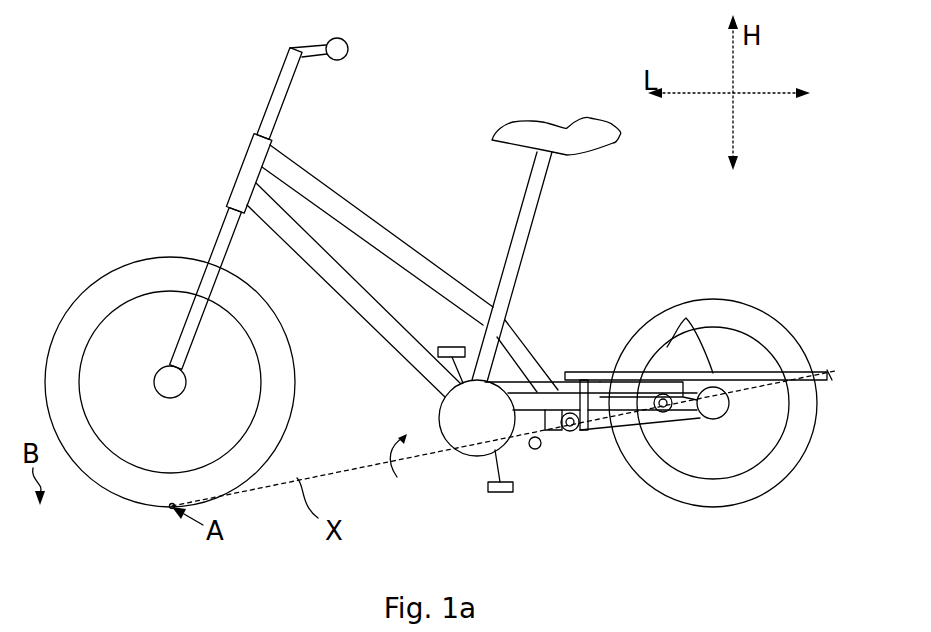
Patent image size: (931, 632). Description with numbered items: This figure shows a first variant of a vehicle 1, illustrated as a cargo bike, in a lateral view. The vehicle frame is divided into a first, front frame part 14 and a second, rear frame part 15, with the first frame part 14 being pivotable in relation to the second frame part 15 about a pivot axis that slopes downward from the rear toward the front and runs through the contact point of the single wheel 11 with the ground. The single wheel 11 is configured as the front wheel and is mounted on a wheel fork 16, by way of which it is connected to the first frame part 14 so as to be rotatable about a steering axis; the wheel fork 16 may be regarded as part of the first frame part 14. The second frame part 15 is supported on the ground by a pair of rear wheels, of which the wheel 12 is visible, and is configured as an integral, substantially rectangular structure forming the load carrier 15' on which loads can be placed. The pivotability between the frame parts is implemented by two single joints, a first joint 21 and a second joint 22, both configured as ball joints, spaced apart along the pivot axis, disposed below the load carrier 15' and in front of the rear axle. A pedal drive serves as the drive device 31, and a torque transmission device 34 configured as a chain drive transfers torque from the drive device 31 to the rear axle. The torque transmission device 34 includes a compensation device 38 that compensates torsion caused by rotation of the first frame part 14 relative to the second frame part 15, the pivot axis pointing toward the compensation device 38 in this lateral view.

The vehicle 1 is at (58, 85).
The single wheel 11 is at (113, 280).
The wheel 12 is at (760, 303).
The first frame part 14 is at (390, 231).
The second frame part 15 is at (696, 330).
The load carrier 15' is at (667, 308).
The wheel fork 16 is at (216, 255).
The first joint 21 is at (572, 432).
The second joint 22 is at (668, 412).
The drive device 31 is at (480, 425).
The torque transmission device 34 is at (551, 366).
The compensation device 38 is at (722, 405).